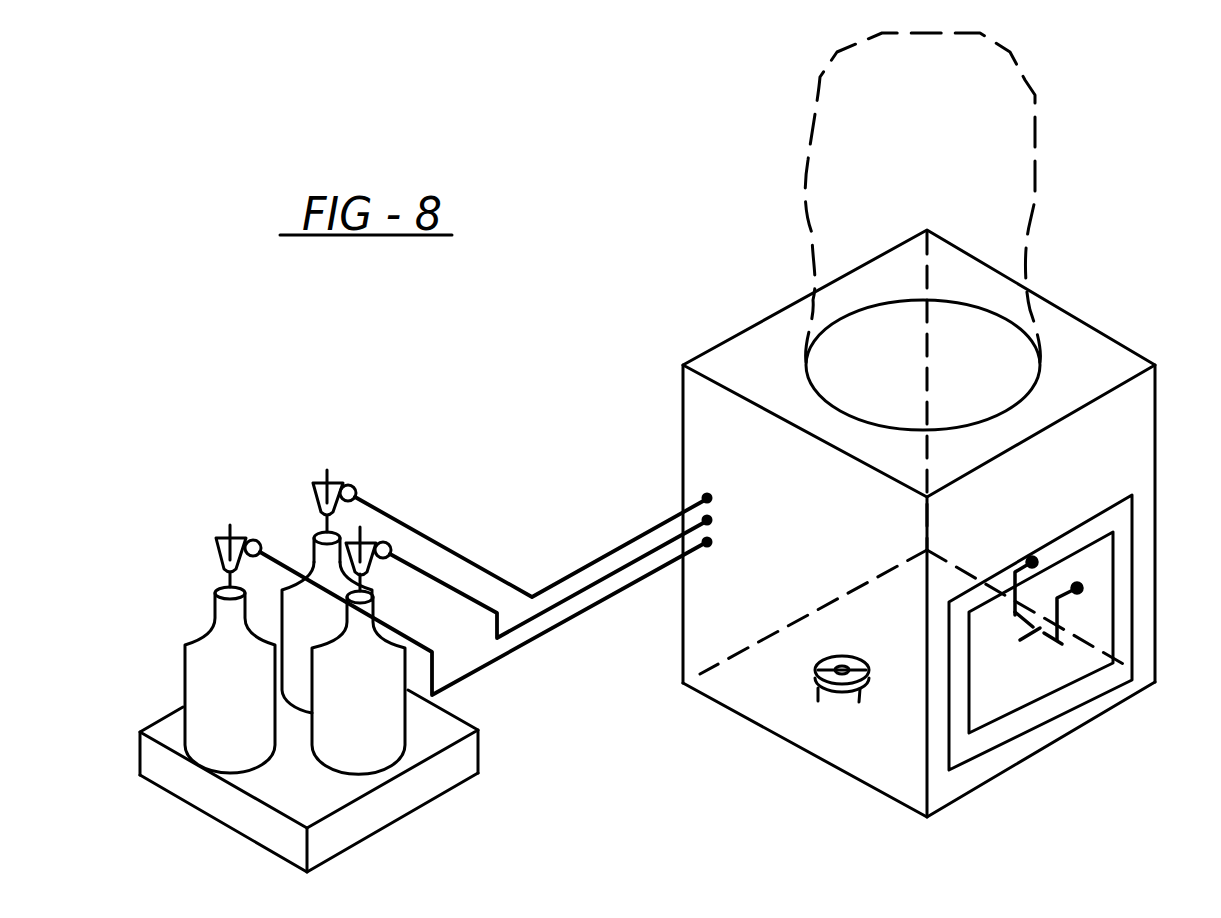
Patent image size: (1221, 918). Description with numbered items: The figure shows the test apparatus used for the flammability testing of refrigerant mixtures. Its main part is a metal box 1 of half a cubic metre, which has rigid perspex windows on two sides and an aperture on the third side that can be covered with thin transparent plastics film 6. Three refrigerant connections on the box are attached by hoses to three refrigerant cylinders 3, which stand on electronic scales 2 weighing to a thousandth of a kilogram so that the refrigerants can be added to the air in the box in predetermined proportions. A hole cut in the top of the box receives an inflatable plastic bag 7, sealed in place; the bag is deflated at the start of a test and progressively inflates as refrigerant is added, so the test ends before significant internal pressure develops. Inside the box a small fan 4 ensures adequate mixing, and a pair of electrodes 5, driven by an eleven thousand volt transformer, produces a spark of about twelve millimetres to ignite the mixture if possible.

The metal box 1 is at (770, 697).
The electronic scales 2 is at (403, 772).
The refrigerant cylinders 3 is at (200, 660).
The fan 4 is at (857, 702).
The electrodes 5 is at (1130, 667).
The transparent plastics film 6 is at (992, 695).
The inflatable plastic bag 7 is at (1032, 217).